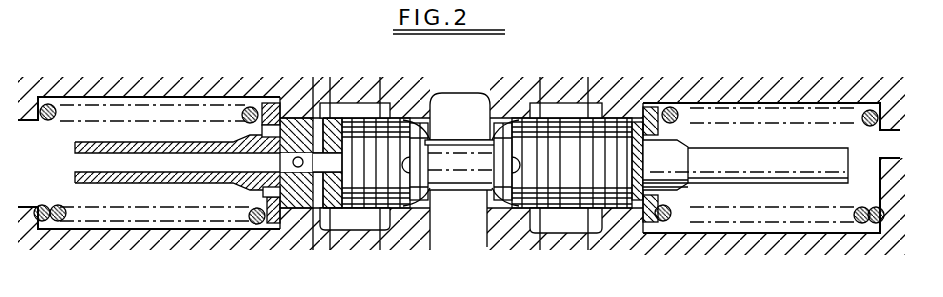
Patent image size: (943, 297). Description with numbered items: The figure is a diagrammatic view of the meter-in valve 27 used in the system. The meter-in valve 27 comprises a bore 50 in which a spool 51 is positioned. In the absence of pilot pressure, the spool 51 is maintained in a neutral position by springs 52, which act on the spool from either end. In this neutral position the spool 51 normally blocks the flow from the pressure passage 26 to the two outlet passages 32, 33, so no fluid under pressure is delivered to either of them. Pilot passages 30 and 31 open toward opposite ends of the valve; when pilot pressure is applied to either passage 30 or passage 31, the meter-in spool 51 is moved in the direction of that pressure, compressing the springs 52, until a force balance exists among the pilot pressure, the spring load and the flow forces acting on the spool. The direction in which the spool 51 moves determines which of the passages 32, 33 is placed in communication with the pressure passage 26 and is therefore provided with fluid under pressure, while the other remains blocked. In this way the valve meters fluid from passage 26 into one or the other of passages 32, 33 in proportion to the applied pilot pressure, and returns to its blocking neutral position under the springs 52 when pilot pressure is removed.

The pressure passage 26 is at (430, 233).
The meter-in valve 27 is at (630, 83).
The pilot passage 30 is at (36, 147).
The pilot passage 31 is at (885, 158).
The passage 32 is at (331, 98).
The passage 33 is at (588, 100).
The bore 50 is at (498, 117).
The spool 51 is at (519, 213).
The springs 52 is at (60, 222).